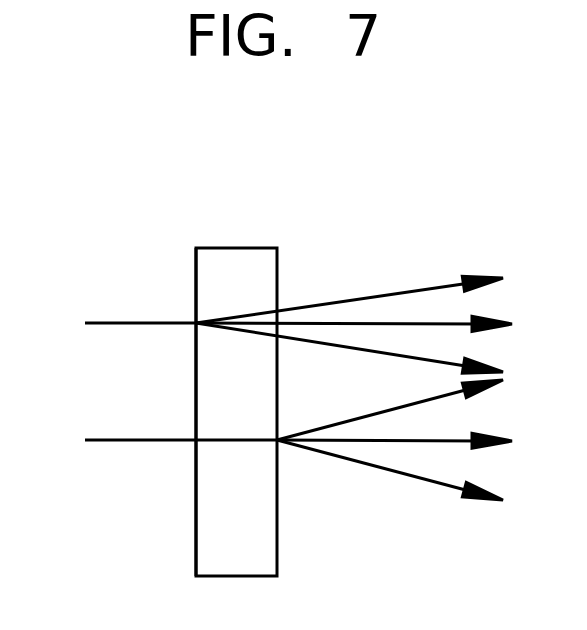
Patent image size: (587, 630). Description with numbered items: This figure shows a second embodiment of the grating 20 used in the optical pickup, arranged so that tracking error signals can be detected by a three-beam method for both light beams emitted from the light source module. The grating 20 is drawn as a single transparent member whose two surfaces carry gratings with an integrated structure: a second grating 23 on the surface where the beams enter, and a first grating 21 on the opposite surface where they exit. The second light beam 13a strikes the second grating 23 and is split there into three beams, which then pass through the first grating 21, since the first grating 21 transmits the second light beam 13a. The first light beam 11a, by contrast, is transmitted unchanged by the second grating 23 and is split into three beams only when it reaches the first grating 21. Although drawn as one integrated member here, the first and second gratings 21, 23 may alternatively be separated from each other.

The grating 20 is at (148, 245).
The first grating 21 is at (277, 538).
The second grating 23 is at (195, 533).
The second light beam 13a is at (135, 323).
The first light beam 11a is at (135, 440).